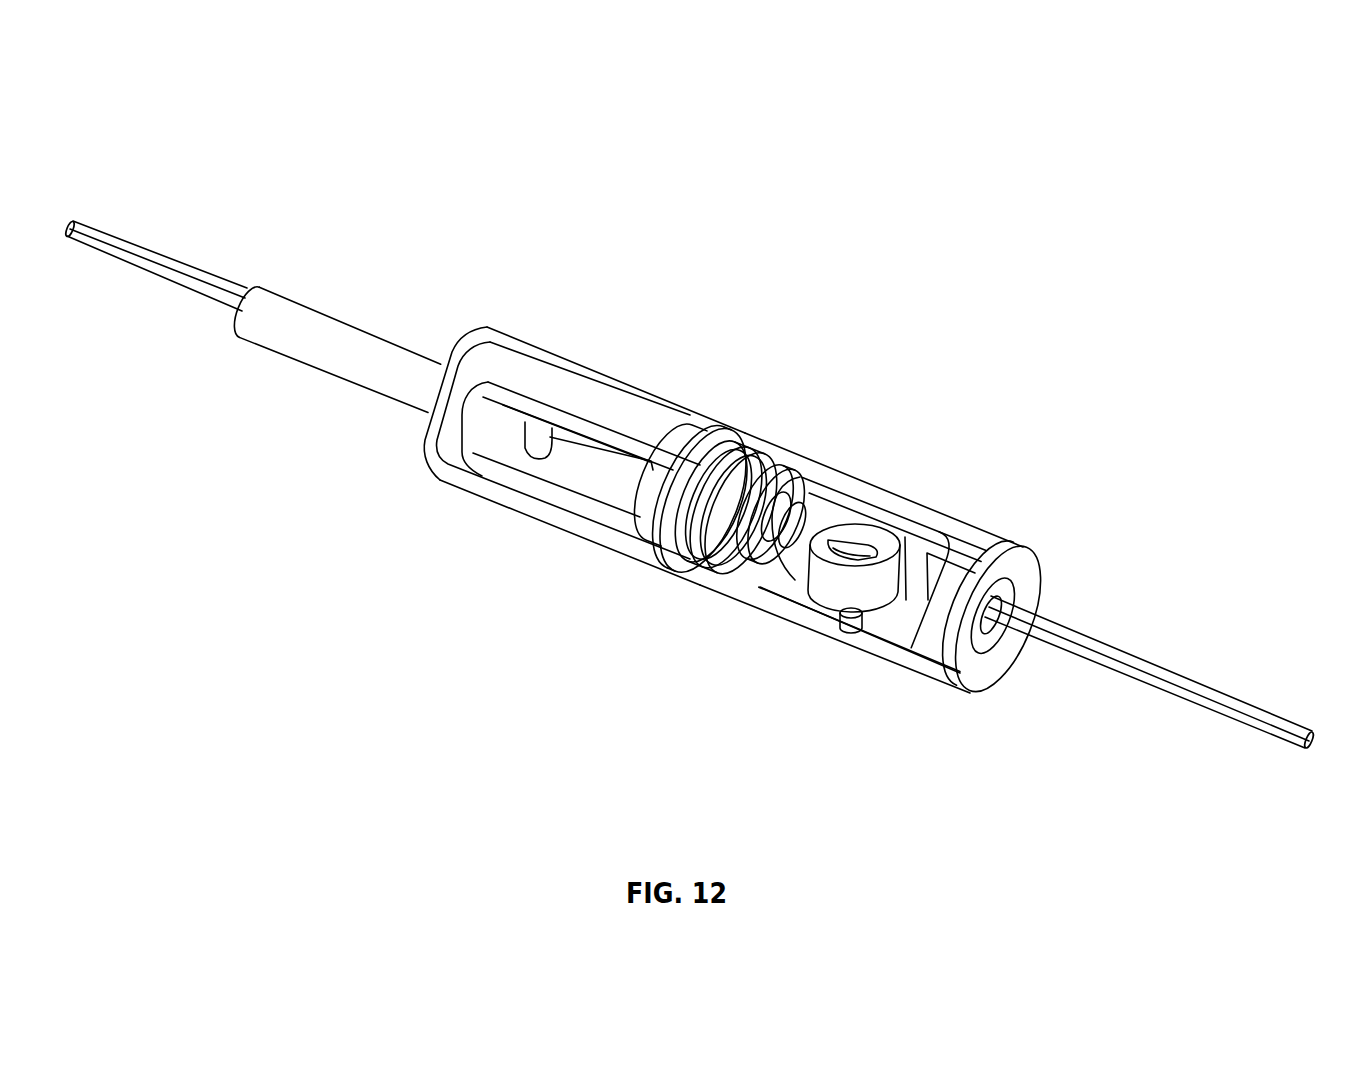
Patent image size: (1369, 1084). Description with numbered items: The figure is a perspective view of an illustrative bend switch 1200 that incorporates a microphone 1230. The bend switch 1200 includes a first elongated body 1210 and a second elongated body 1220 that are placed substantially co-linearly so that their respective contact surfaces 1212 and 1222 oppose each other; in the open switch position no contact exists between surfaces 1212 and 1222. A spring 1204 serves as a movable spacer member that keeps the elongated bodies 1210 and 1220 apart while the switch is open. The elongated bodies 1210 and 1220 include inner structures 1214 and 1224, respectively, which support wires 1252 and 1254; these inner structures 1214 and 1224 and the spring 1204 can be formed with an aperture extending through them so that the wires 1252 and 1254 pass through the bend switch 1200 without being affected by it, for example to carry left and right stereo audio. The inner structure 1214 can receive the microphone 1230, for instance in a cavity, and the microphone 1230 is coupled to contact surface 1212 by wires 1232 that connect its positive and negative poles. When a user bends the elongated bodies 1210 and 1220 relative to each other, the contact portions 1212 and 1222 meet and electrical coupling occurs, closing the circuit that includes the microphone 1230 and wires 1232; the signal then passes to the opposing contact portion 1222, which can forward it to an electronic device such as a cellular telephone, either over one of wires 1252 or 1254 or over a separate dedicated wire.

The bend switch 1200 is at (238, 110).
The spring 1204 is at (773, 492).
The first elongated body 1210 is at (965, 523).
The contact surface 1212 is at (713, 571).
The inner structure 1214 is at (800, 617).
The second elongated body 1220 is at (547, 353).
The contact surface 1222 is at (683, 573).
The inner structure 1224 is at (523, 491).
The microphone 1230 is at (897, 555).
The wires 1232 is at (840, 536).
The wire 1252 is at (161, 256).
The wire 1254 is at (183, 288).